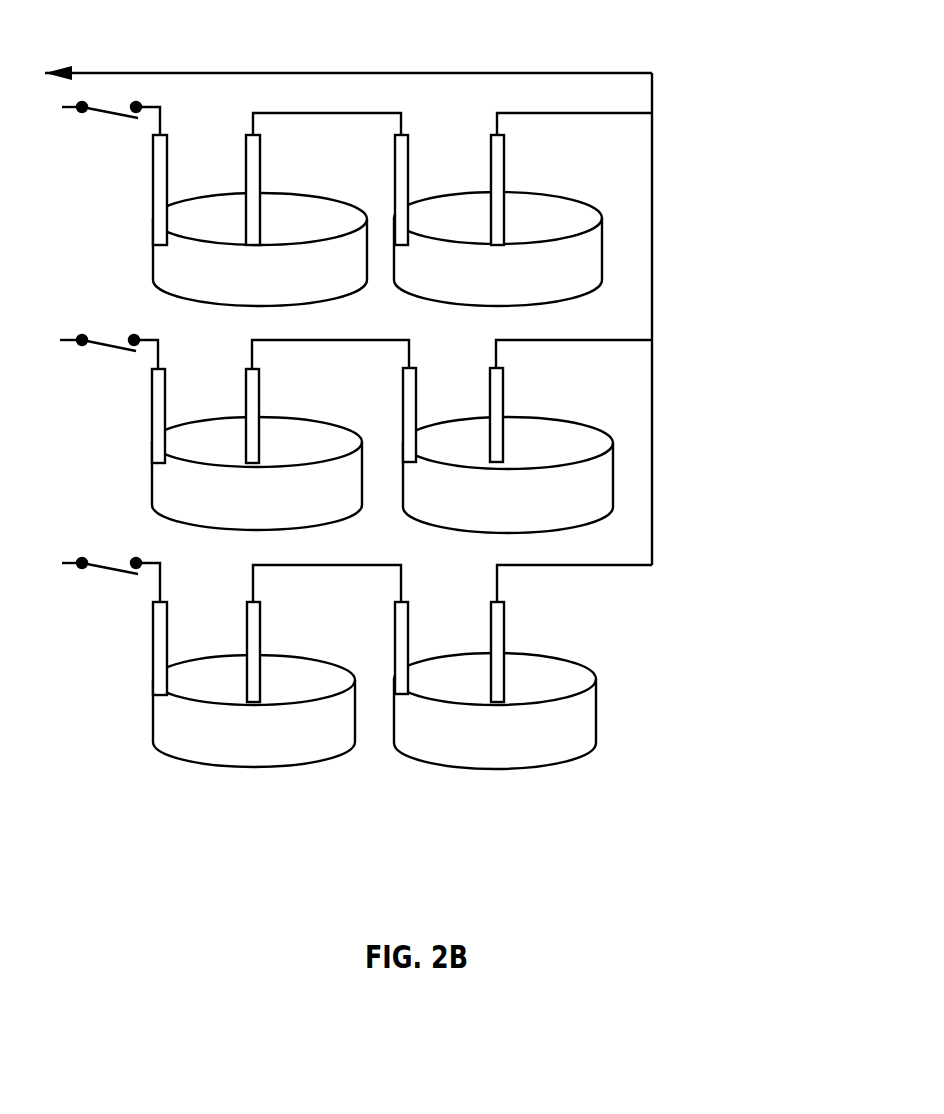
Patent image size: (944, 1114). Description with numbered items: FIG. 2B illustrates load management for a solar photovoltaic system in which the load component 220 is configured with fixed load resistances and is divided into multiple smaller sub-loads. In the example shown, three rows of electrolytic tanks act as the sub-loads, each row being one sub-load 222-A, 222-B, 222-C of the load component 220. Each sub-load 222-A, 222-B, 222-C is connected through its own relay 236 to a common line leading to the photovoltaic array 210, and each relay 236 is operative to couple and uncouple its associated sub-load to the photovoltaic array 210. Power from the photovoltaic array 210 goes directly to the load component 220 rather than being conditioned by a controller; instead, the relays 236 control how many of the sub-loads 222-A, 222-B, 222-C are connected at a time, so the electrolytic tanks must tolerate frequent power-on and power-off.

The photovoltaic array 210 is at (348, 291).
The relay 236 is at (98, 367).
The load component 220 is at (513, 513).
The sub-load 222-A is at (673, 143).
The sub-load 222-B is at (673, 359).
The sub-load 222-C is at (680, 583).